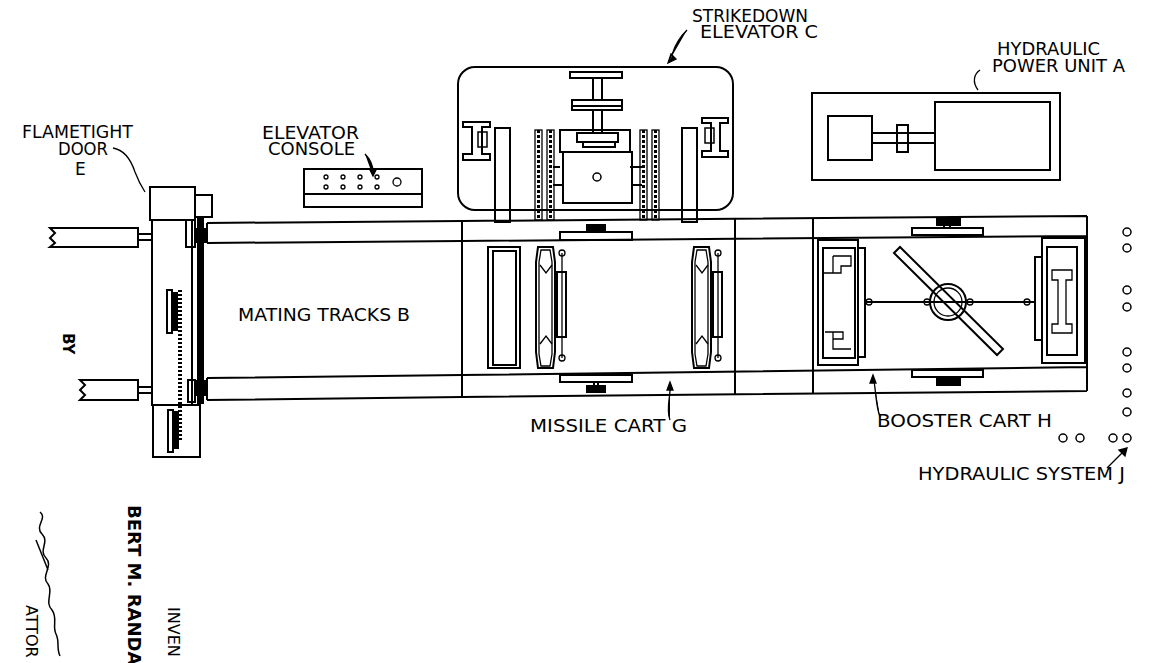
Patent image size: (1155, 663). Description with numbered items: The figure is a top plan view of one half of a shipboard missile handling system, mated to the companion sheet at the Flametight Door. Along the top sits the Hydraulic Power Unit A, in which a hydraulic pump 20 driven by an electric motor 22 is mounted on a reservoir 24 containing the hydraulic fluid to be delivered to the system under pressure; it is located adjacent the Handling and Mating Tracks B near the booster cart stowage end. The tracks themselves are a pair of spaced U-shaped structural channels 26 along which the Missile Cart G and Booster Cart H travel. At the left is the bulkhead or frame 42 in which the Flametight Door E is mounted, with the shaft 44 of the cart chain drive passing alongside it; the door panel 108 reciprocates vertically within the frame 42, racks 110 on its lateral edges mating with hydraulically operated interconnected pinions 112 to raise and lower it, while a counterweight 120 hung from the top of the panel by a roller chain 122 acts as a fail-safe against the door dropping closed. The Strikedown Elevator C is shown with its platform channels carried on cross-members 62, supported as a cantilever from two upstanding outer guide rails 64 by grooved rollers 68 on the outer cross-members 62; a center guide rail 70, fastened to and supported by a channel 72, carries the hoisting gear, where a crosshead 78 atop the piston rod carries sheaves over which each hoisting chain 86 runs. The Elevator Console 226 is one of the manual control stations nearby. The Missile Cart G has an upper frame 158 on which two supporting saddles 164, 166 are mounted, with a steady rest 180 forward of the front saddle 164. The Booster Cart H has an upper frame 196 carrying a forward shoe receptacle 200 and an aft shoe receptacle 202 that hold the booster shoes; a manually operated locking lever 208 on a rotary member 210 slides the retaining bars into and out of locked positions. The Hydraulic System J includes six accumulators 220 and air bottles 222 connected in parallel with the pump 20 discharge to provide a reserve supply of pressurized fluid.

The hydraulic pump 20 is at (857, 148).
The electric motor 22 is at (999, 148).
The reservoir 24 is at (936, 123).
The U-shaped structural channels 26 is at (330, 242).
The bulkhead or frame 42 is at (172, 192).
The shaft 44 is at (143, 247).
The cross-members 62 is at (495, 180).
The outer guide rails 64 is at (475, 122).
The grooved roller 68 is at (478, 140).
The center guide rail 70 is at (609, 110).
The channel 72 is at (593, 72).
The crosshead 78 is at (621, 174).
The hoisting chain 86 is at (538, 128).
The door panel 108 is at (203, 275).
The racks 110 is at (188, 235).
The pinions 112 is at (209, 232).
The counterweight 120 is at (192, 458).
The roller chain 122 is at (175, 347).
The upper frame 158 is at (735, 261).
The front supporting saddle 164 is at (557, 306).
The supporting saddle 166 is at (690, 305).
The steady rest 180 is at (488, 304).
The upper frame 196 is at (1000, 268).
The forward shoe receptacle 200 is at (842, 245).
The aft shoe receptacle 202 is at (1054, 241).
The locking lever 208 is at (920, 280).
The rotary member 210 is at (937, 310).
The accumulators 220 is at (1126, 311).
The air bottles 222 is at (1126, 286).
The Elevator Console 226 is at (374, 169).